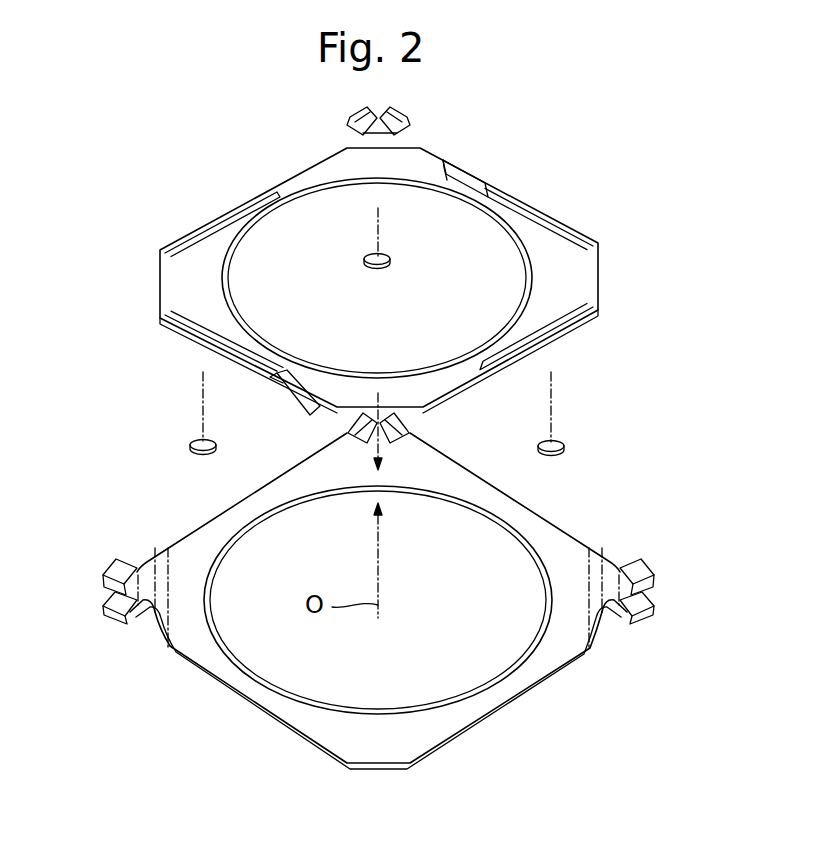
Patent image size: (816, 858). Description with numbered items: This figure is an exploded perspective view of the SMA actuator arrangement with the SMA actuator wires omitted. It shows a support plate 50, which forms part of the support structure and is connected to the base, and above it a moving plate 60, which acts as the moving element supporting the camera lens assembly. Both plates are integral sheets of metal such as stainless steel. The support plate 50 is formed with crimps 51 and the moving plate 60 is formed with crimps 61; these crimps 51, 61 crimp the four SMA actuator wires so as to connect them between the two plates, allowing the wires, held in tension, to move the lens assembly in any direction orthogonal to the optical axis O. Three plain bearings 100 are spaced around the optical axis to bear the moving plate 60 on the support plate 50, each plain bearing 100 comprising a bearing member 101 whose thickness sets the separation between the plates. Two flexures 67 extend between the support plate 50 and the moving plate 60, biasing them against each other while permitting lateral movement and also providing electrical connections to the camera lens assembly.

The support plate 50 is at (558, 545).
The crimps 51 is at (100, 572).
The moving plate 60 is at (550, 247).
The crimps 61 is at (412, 118).
The flexures 67 is at (503, 187).
The plain bearings 100 is at (420, 257).
The bearing member 101 is at (368, 266).